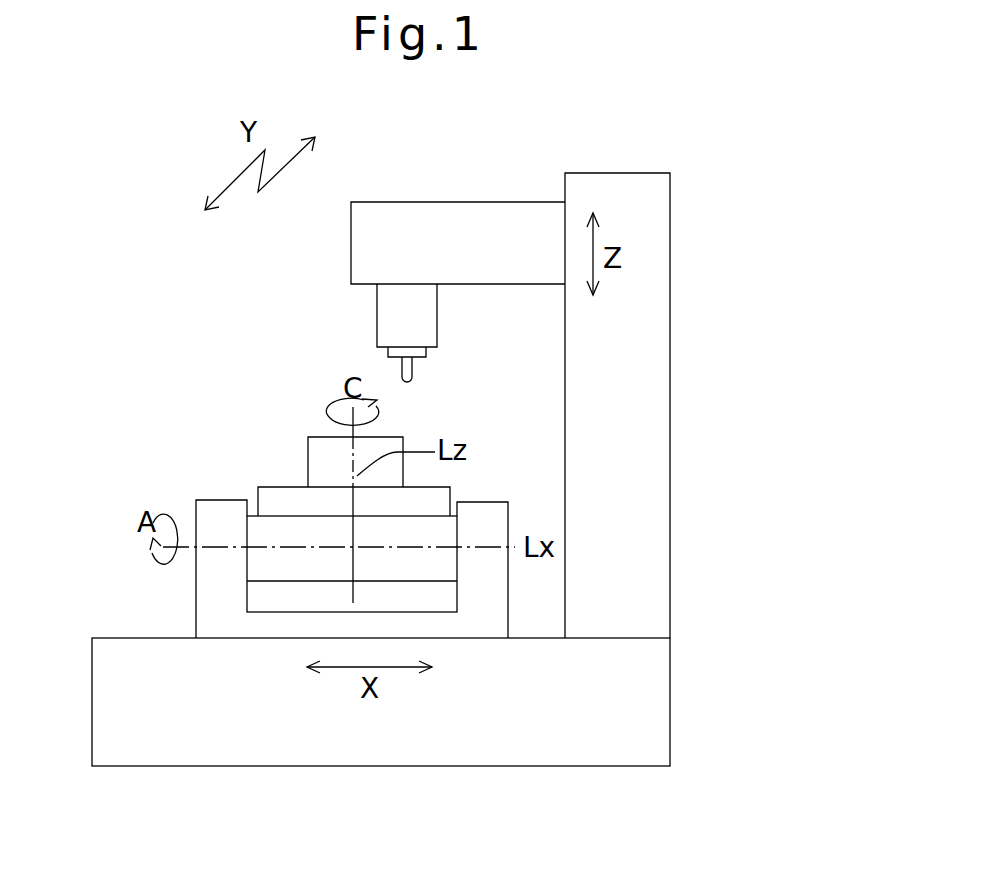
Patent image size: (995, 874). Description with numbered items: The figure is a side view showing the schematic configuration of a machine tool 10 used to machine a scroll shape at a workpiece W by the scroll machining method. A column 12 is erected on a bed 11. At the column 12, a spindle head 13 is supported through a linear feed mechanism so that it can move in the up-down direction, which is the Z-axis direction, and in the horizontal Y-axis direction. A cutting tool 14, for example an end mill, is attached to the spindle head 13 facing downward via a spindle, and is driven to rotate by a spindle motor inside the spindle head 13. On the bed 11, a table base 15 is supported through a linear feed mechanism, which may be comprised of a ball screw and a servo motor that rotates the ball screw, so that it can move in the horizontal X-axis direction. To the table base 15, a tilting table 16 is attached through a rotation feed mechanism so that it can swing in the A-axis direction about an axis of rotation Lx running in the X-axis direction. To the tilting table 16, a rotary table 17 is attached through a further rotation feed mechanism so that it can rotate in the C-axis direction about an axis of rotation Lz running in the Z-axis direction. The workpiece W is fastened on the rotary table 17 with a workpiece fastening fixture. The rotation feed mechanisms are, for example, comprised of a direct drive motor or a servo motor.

The machine tool 10 is at (700, 410).
The bed 11 is at (548, 768).
The column 12 is at (670, 543).
The spindle head 13 is at (500, 202).
The cutting tool 14 is at (400, 370).
The table base 15 is at (196, 607).
The tilting table 16 is at (277, 515).
The rotary table 17 is at (293, 485).
The workpiece W is at (390, 437).